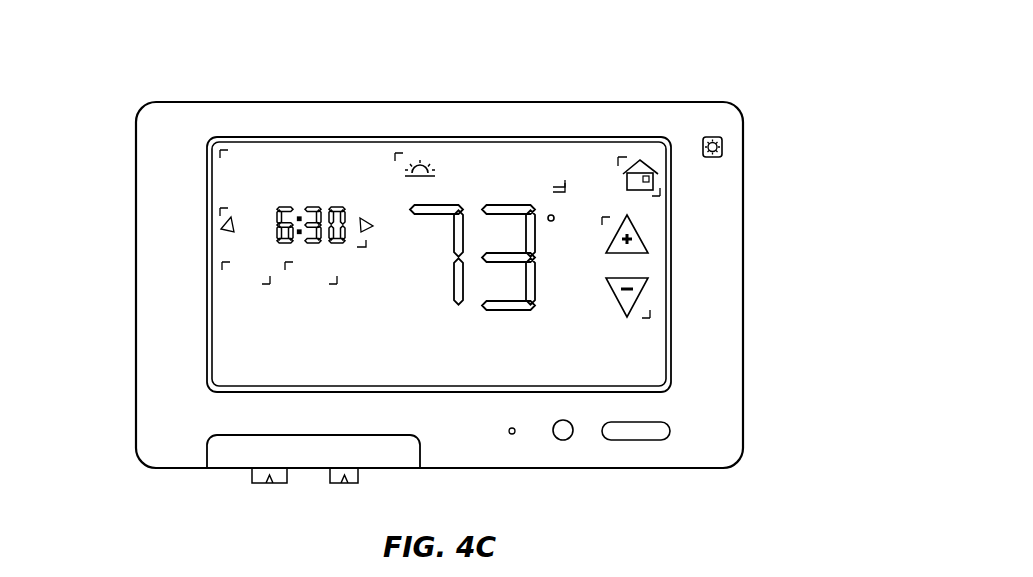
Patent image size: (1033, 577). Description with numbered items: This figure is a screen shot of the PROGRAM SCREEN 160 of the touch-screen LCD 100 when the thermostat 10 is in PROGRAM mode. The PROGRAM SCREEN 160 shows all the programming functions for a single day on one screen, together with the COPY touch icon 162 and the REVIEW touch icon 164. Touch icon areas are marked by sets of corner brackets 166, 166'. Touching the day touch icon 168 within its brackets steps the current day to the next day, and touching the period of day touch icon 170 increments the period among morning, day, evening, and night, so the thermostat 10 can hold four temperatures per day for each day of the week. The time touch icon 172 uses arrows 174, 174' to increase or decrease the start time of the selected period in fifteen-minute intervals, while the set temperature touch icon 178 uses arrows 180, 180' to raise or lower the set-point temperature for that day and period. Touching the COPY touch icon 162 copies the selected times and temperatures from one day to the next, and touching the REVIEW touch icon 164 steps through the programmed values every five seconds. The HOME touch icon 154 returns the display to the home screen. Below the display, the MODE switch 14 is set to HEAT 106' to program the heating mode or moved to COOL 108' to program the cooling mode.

The thermostat 10 is at (688, 122).
The MODE switch 14 is at (341, 483).
The touch-screen LCD 100 is at (593, 168).
The HEAT position 106' is at (313, 478).
The COOL position 108' is at (399, 480).
The HOME touch icon 154 is at (652, 163).
The PROGRAM SCREEN 160 is at (678, 231).
The COPY touch icon 162 is at (238, 263).
The REVIEW touch icon 164 is at (293, 285).
The corner brackets 166 is at (194, 114).
The corner brackets 166' is at (379, 126).
The day touch icon 168 is at (278, 163).
The period of day touch icon 170 is at (493, 170).
The time touch icon 172 is at (260, 220).
The arrow 174 is at (157, 214).
The arrow 174' is at (354, 235).
The set temperature touch icon 178 is at (647, 296).
The arrow 180 is at (700, 227).
The arrow 180' is at (716, 330).